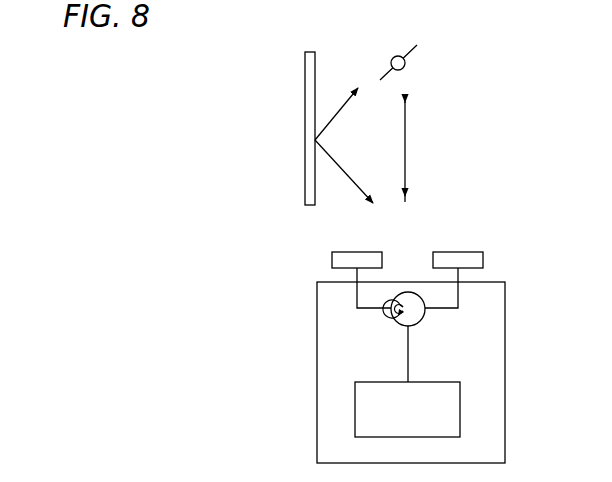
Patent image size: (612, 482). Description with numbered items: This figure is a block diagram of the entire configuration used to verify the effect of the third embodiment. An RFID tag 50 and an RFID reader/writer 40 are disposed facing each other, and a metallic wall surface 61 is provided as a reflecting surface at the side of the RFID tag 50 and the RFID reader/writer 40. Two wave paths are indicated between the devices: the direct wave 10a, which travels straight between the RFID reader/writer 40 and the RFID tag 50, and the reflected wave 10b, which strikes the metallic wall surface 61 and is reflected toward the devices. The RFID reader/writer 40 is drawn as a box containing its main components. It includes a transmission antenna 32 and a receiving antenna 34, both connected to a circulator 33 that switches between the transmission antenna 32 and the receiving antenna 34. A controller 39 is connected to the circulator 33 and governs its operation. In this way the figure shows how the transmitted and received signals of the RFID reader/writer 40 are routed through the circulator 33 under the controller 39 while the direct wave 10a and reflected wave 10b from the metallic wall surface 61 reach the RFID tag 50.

The metallic wall surface 61 is at (305, 80).
The reflected wave 10b is at (342, 101).
The RFID tag 50 is at (418, 59).
The direct wave 10a is at (405, 158).
The RFID reader/writer 40 is at (267, 285).
The transmission antenna 32 is at (345, 252).
The receiving antenna 34 is at (484, 256).
The circulator 33 is at (423, 320).
The controller 39 is at (460, 412).